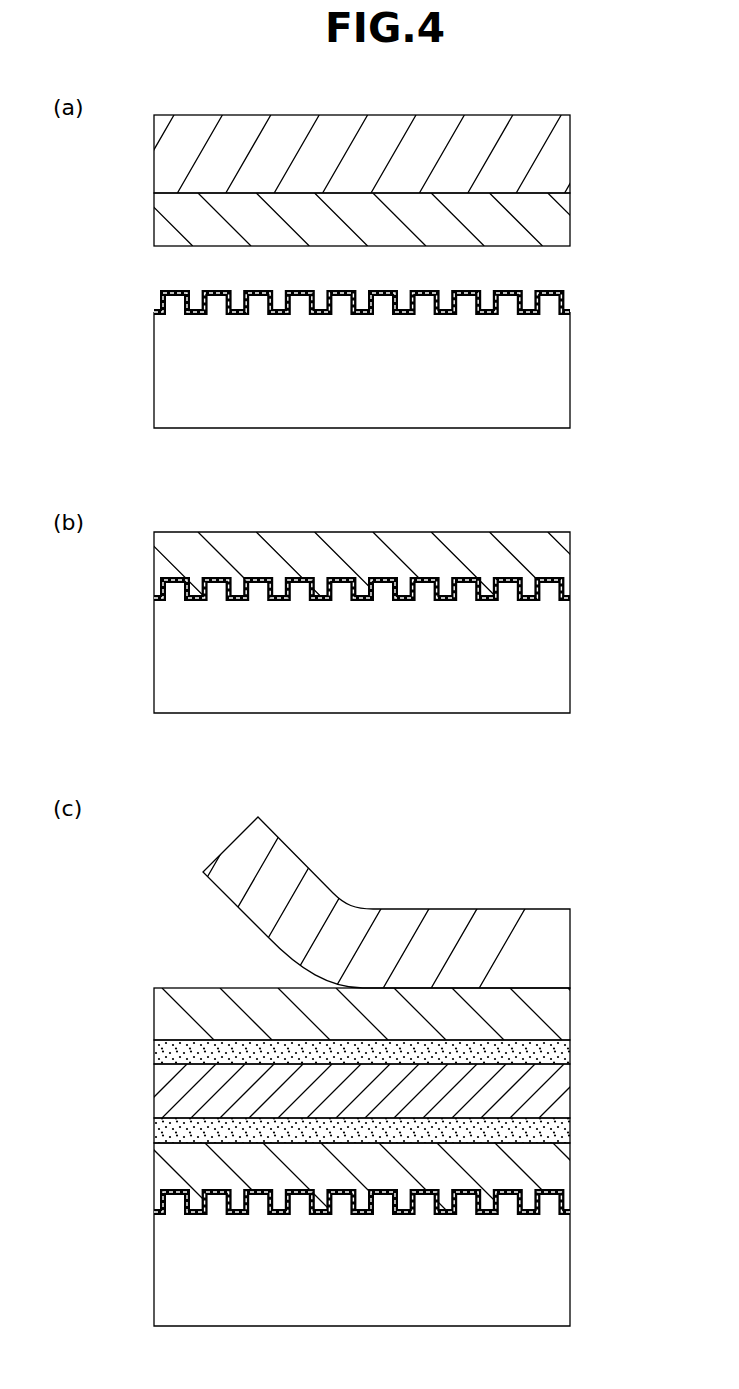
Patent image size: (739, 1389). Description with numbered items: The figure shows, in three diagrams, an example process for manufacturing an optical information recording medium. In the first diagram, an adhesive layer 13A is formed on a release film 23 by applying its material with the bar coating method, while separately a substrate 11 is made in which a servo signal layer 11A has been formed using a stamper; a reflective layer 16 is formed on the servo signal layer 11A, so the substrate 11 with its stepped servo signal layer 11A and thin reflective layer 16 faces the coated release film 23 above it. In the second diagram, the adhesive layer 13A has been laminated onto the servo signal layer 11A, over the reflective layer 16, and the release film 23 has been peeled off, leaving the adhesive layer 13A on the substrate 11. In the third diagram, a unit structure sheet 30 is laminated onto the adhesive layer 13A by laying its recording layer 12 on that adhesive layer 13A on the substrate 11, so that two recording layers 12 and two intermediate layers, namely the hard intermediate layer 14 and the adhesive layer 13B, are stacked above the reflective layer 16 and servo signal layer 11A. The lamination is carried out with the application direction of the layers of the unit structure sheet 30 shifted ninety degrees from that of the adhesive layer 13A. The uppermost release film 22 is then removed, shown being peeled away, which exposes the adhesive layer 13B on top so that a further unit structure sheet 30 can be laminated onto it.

The substrate 11 is at (557, 363).
The servo signal layer 11A is at (508, 300).
The recording layer 12 is at (558, 1051).
The adhesive layer 13A is at (558, 215).
The adhesive layer 13B is at (558, 1010).
The hard intermediate layer 14 is at (374, 1091).
The reflective layer 16 is at (563, 300).
The release film 22 is at (560, 950).
The release film 23 is at (558, 150).
The unit structure sheet 30 is at (407, 1066).